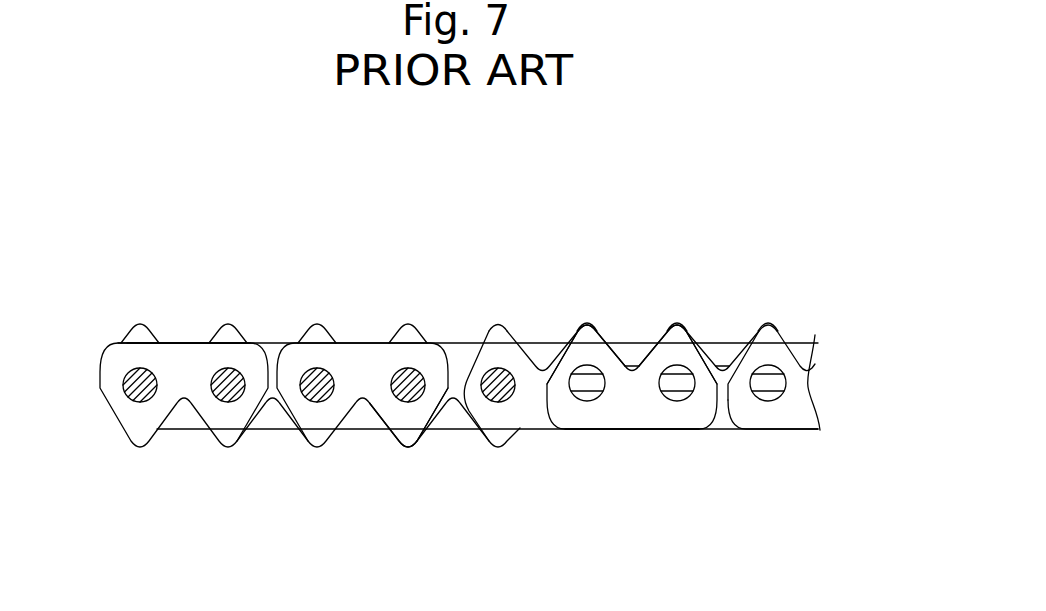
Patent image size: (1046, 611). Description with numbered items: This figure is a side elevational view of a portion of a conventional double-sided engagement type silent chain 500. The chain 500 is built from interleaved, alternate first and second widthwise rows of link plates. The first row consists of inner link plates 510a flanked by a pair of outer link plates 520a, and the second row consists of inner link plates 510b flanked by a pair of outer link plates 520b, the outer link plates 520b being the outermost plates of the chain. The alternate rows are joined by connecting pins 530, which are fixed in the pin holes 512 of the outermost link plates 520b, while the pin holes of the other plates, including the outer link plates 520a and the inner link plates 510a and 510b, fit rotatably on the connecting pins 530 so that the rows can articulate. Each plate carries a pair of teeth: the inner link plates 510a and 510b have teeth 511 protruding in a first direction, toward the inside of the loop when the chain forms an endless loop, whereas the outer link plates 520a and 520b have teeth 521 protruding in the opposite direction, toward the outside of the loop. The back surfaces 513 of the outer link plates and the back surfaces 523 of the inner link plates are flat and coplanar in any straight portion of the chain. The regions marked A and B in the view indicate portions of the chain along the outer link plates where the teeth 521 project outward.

The double-sided engagement type silent chain 500 is at (410, 300).
The inner link plate 510a is at (191, 358).
The inner link plate 510b is at (455, 350).
The tooth 511 is at (410, 437).
The pin hole 512 is at (573, 382).
The back surface 513 is at (166, 343).
The outer link plate 520a is at (540, 378).
The outer link plate 520b is at (641, 417).
The tooth 521 is at (595, 333).
The back surface 523 is at (663, 428).
The connecting pin 530 is at (310, 377).
The region A is at (635, 337).
The region B is at (728, 332).